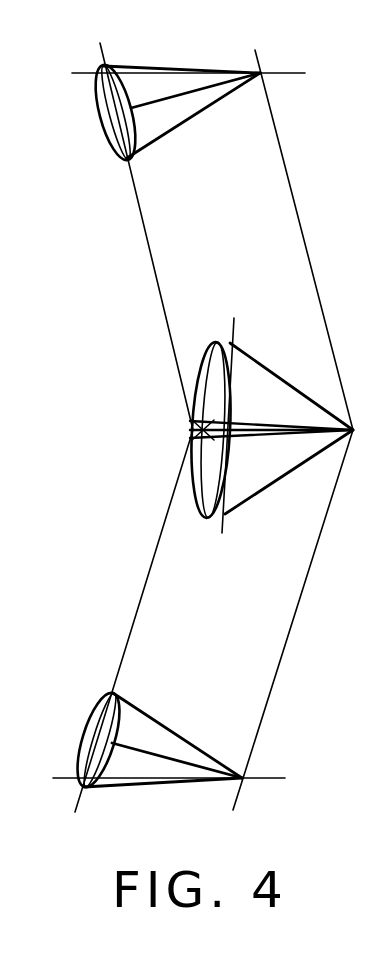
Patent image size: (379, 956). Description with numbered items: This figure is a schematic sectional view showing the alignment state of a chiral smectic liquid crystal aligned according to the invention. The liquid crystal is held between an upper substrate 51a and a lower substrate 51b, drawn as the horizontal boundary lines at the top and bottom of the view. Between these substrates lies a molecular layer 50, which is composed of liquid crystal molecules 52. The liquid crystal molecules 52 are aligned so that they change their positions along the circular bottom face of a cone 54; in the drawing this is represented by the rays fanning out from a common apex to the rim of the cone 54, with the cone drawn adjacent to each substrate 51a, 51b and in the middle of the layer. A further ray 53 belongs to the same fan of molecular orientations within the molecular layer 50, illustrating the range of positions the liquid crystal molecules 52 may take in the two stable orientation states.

The molecular layer 50 is at (282, 147).
The upper substrate 51a is at (283, 73).
The lower substrate 51b is at (262, 778).
The liquid crystal molecules 52 is at (183, 97).
The light ray 53 is at (230, 95).
The cone 54 is at (113, 137).